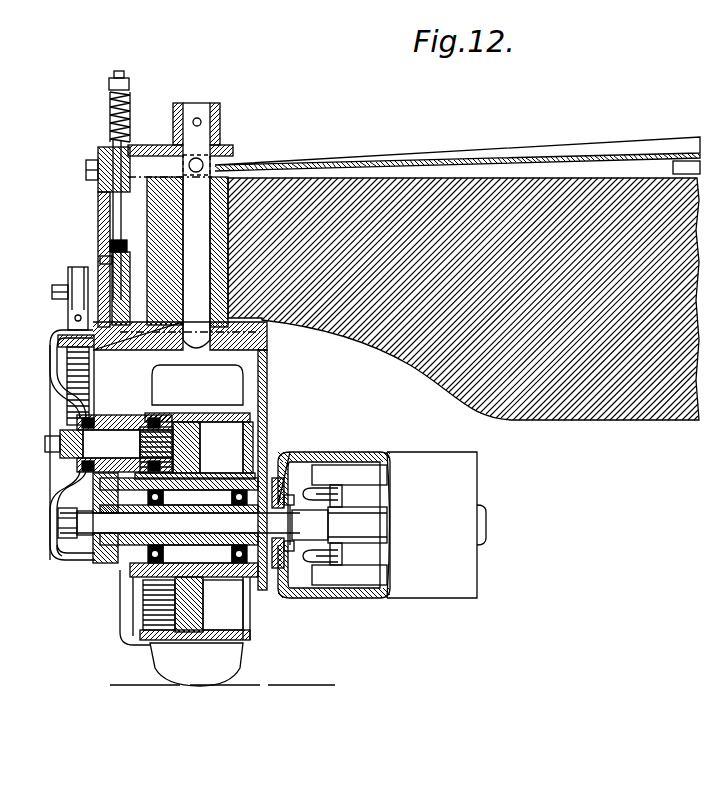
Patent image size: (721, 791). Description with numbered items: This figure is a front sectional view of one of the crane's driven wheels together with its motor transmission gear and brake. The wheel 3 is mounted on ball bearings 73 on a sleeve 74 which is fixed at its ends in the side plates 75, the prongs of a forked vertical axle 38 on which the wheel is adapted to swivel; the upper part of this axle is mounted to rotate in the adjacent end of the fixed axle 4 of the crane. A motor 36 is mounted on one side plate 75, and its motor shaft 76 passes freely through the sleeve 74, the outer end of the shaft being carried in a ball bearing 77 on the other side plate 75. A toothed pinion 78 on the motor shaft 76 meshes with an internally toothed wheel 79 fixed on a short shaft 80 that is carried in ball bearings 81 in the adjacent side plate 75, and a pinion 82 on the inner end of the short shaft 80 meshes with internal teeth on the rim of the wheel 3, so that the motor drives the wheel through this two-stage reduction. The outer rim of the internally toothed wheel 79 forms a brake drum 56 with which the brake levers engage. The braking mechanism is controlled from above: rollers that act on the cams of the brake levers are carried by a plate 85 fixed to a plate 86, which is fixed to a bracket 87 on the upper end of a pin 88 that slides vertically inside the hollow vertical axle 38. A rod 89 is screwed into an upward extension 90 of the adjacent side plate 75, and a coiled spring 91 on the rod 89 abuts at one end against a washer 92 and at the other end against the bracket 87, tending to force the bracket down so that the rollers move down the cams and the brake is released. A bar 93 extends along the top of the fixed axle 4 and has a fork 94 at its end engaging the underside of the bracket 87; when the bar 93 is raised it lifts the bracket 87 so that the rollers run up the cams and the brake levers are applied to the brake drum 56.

The wheel 3 is at (230, 664).
The fixed axle 4 is at (399, 347).
The motor 36 is at (382, 525).
The vertical axle 38 is at (170, 212).
The brake drum 56 is at (70, 342).
The ball bearings 73 is at (168, 507).
The sleeve 74 is at (244, 505).
The side plate 75 is at (78, 407).
The motor shaft 76 is at (137, 525).
The ball bearing 77 is at (92, 554).
The toothed pinion 78 is at (75, 505).
The internally toothed wheel 79 is at (67, 356).
The short shaft 80 is at (80, 437).
The ball bearings 81 is at (87, 443).
The pinion 82 is at (157, 425).
The plate 85 is at (68, 283).
The plate 86 is at (98, 248).
The bracket 87 is at (100, 196).
The pin 88 is at (200, 210).
The rod 89 is at (100, 160).
The upward extension 90 is at (118, 258).
The coiled spring 91 is at (110, 112).
The washer 92 is at (129, 90).
The bar 93 is at (510, 160).
The fork 94 is at (212, 160).